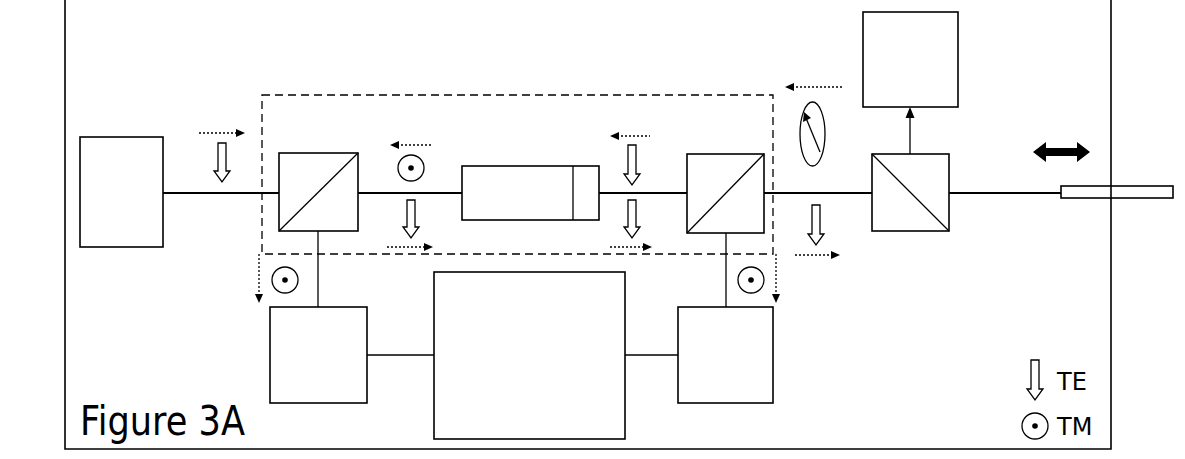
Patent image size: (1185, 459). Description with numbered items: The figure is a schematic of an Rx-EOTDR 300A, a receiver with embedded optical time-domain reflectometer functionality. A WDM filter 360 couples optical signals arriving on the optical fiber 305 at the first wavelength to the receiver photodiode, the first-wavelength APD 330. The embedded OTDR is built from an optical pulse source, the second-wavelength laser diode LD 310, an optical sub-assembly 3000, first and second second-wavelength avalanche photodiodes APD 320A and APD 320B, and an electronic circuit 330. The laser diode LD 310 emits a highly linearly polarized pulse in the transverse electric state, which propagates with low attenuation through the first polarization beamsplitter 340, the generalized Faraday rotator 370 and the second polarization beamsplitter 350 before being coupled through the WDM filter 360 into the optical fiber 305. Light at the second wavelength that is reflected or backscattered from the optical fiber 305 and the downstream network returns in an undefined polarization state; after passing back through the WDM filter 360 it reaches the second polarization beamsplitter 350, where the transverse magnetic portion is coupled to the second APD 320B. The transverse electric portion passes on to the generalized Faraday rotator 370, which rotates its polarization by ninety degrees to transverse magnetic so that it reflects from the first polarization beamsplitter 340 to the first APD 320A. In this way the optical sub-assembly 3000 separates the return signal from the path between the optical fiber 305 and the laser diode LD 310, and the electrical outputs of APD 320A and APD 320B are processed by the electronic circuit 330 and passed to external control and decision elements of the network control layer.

The Rx-EOTDR 300A is at (588, 224).
The optical sub-assembly 3000 is at (517, 157).
The optical pulse source LD λ2 310 is at (121, 192).
The first polarization beamsplitter 340 is at (318, 214).
The generalized Faraday rotator 370 is at (530, 176).
The second polarization beamsplitter 350 is at (725, 214).
The WDM filter 360 is at (910, 185).
The electronic circuit 330 is at (696, 225).
The first APD, APD λ2 320A is at (352, 355).
The second APD, APD λ2 320B is at (699, 355).
The optical fiber 305 is at (1078, 210).